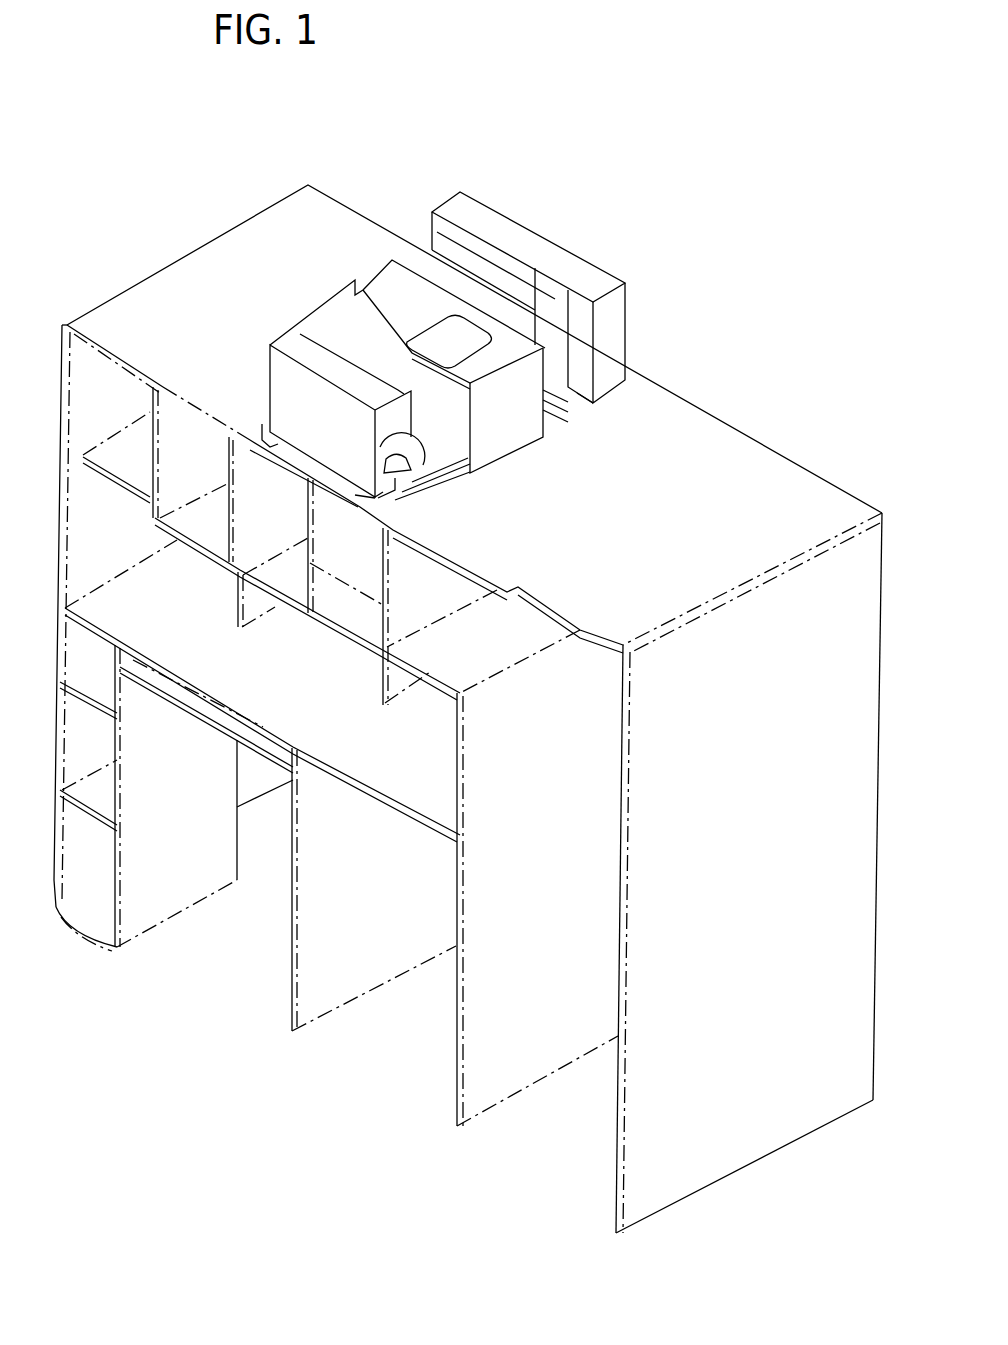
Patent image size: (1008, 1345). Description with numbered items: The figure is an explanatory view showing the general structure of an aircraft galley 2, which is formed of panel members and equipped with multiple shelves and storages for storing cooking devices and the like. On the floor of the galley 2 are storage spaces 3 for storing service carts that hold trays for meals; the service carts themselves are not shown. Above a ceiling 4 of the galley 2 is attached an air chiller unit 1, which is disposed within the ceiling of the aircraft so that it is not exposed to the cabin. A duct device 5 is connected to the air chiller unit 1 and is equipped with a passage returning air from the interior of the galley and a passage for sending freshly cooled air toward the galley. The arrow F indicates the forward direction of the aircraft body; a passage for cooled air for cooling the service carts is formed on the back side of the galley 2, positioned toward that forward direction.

The air chiller unit 1 is at (389, 242).
The galley 2 is at (790, 421).
The storage spaces 3 is at (225, 952).
The ceiling 4 is at (173, 300).
The duct device 5 is at (601, 272).
The arrow F is at (705, 170).